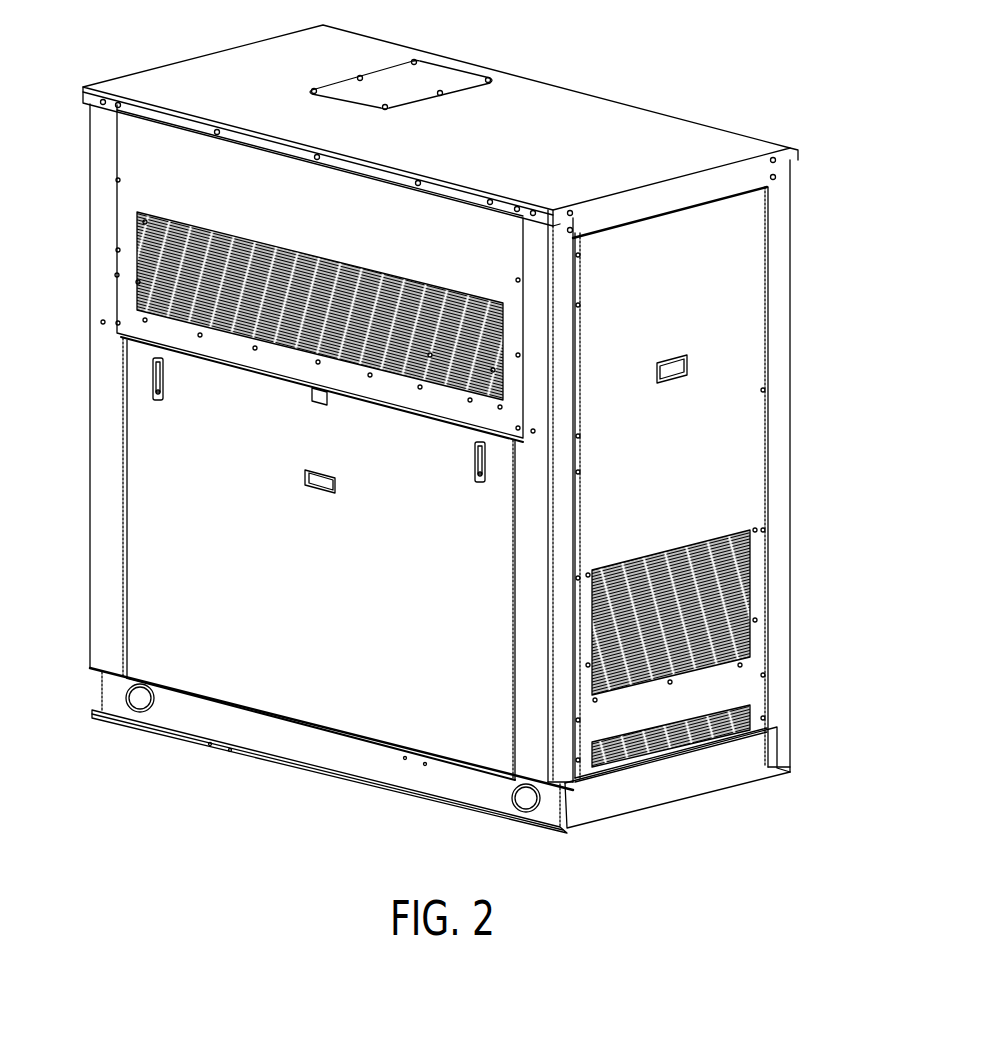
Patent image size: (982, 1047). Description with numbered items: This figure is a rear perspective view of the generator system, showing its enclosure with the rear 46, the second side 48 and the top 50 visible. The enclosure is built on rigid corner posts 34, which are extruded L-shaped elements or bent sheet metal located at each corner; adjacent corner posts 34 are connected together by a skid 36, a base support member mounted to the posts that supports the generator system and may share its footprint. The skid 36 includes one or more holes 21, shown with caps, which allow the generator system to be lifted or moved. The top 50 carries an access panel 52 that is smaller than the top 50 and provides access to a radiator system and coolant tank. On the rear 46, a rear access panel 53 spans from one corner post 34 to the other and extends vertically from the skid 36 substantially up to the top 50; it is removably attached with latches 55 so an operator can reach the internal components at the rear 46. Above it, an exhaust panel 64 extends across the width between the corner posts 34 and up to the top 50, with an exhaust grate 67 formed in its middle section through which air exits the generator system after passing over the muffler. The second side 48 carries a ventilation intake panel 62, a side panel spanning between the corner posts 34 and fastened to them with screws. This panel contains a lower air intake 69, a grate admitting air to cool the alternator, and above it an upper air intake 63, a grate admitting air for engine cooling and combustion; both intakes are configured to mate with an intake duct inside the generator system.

The holes 21 is at (135, 697).
The corner posts 34 is at (103, 588).
The skid 36 is at (315, 748).
The rear 46 is at (148, 498).
The second side 48 is at (720, 405).
The top 50 is at (620, 117).
The access panel 52 is at (433, 75).
The rear access panel 53 is at (262, 688).
The latches 55 is at (166, 380).
The ventilation intake panel 62 is at (722, 503).
The upper air intake 63 is at (742, 590).
The exhaust panel 64 is at (118, 198).
The exhaust grate 67 is at (137, 292).
The lower air intake 69 is at (718, 733).